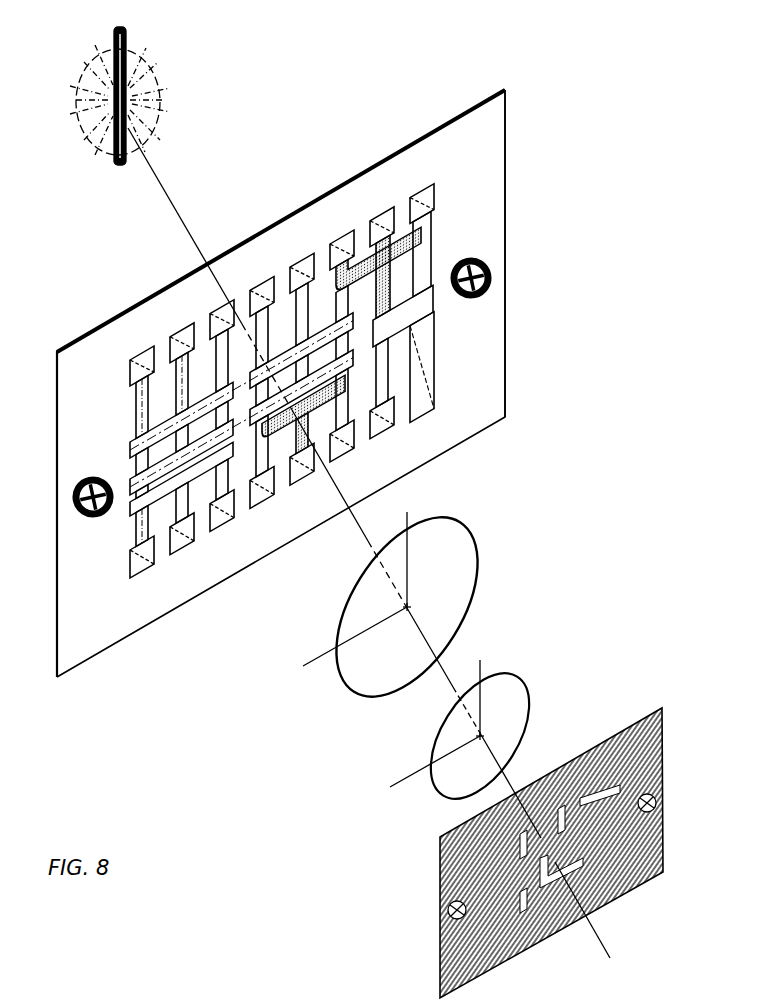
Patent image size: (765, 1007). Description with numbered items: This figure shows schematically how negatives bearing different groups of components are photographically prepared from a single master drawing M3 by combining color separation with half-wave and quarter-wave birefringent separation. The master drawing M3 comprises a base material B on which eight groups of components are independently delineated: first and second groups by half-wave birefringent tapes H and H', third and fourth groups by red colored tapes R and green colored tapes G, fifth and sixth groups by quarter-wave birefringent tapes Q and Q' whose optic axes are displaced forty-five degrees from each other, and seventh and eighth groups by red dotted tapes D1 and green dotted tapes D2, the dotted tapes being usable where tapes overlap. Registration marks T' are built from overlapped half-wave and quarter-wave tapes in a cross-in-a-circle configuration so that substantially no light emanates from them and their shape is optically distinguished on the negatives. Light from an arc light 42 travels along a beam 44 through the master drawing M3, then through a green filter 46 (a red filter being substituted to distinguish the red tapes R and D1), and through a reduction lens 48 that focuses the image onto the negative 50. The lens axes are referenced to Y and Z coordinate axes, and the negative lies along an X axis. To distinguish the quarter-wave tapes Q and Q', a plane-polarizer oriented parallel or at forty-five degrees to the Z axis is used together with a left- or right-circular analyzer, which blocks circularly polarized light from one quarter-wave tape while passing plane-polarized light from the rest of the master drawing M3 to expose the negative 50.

The arc light 42 is at (160, 72).
The light beam 44 is at (178, 210).
The green filter 46 is at (478, 560).
The reduction lens 48 is at (525, 696).
The negative 50 is at (665, 762).
The base material B is at (57, 390).
The master drawing M3 is at (507, 240).
The birefringent tape H is at (287, 336).
The birefringent tape H' is at (281, 334).
The red colored tape R is at (177, 397).
The green colored tape G is at (228, 361).
The quarter-wave birefringent material Q is at (283, 447).
The quarter-wave birefringent material Q' is at (130, 526).
The red dotted material D1 is at (390, 300).
The green dotted material D2 is at (369, 290).
The alignment target T' is at (282, 369).
The X axis X is at (587, 921).
The Y axis Y is at (384, 703).
The Z axis Z is at (442, 614).